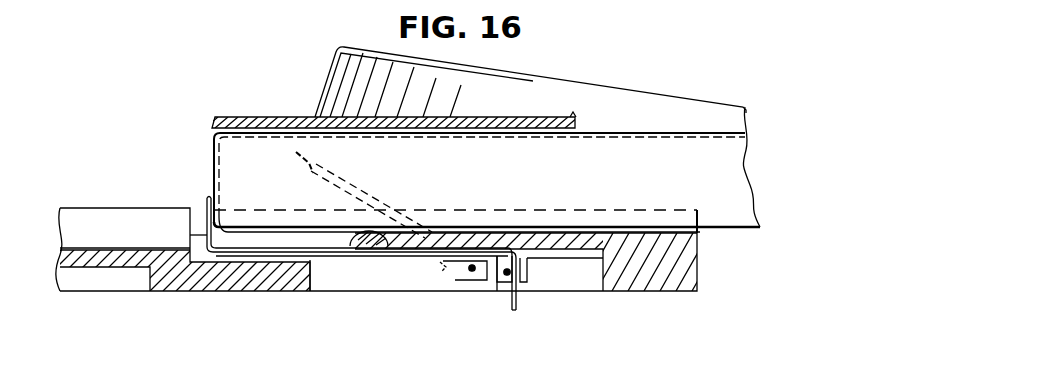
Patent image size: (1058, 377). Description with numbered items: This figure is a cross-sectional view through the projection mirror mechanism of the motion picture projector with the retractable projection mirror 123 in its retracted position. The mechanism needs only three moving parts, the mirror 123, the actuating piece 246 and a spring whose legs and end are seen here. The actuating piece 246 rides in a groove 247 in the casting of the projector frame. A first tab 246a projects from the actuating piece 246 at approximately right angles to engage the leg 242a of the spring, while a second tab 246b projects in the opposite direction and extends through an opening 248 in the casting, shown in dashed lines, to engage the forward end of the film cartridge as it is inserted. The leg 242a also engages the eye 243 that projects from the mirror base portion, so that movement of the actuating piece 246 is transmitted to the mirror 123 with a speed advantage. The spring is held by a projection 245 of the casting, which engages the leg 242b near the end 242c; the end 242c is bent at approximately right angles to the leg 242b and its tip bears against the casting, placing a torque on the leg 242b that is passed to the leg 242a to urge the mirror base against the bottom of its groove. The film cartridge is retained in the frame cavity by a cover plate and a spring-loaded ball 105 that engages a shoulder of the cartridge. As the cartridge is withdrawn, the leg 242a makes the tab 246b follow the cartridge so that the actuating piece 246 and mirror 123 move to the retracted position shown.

The spring-loaded ball 105 is at (380, 233).
The retractable projection mirror 123 is at (311, 171).
The opening 248 is at (360, 237).
The actuating piece 246 is at (243, 257).
The first tab 246a is at (518, 303).
The second tab 246b is at (205, 200).
The projection 245 is at (477, 282).
The spring leg 242a is at (503, 278).
The spring leg 242b is at (468, 271).
The spring end 242c is at (440, 270).
The eye 243 is at (528, 278).
The groove 247 is at (658, 293).